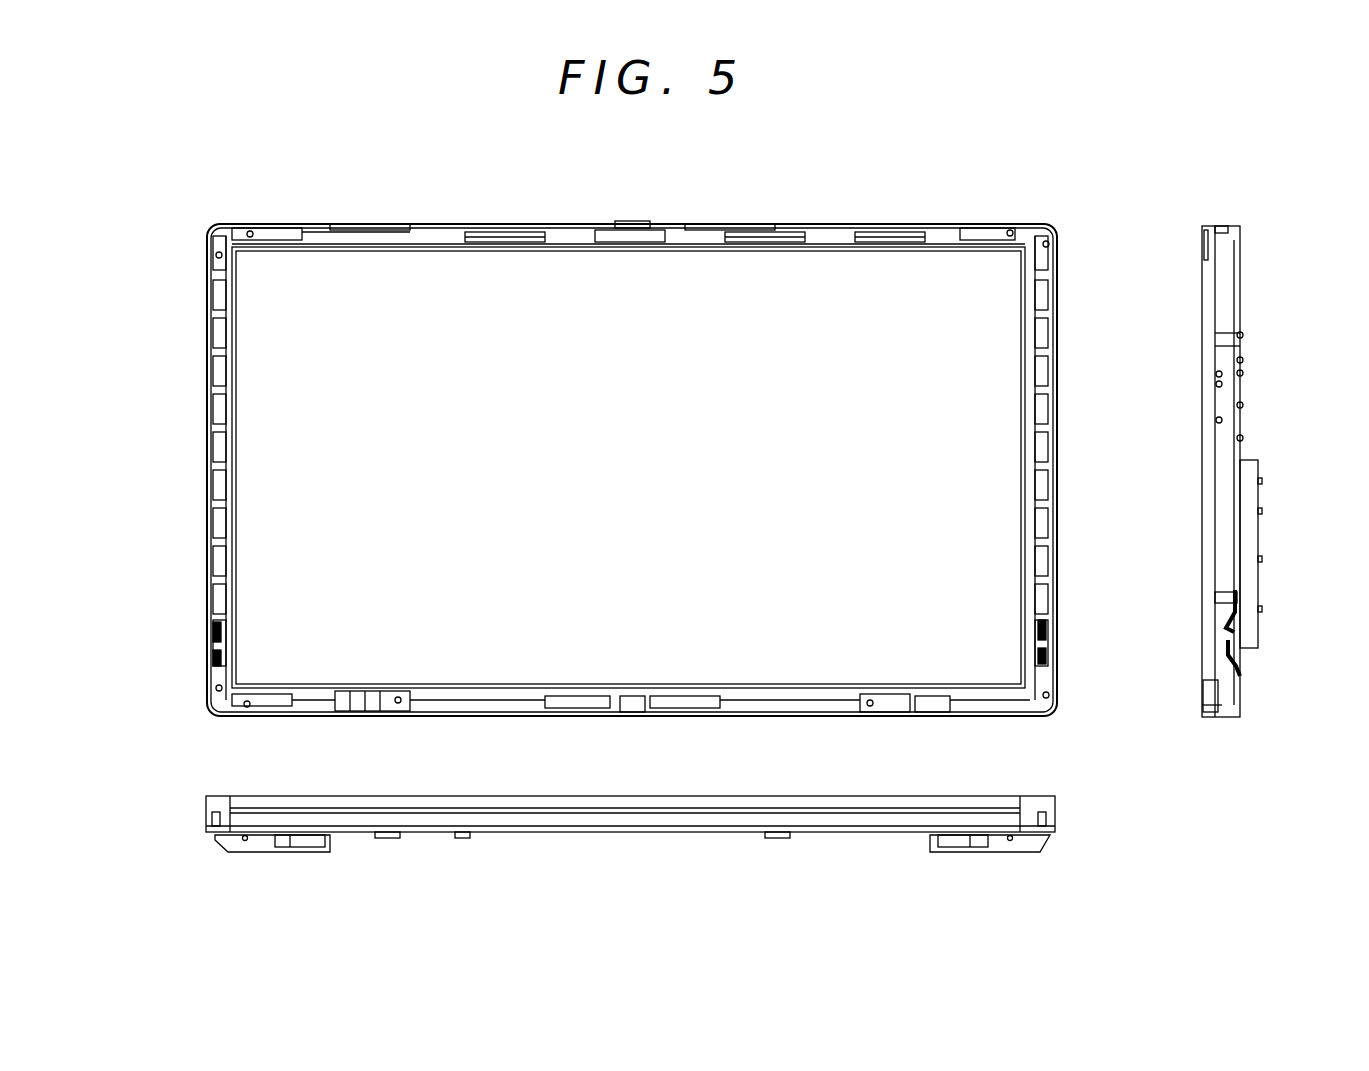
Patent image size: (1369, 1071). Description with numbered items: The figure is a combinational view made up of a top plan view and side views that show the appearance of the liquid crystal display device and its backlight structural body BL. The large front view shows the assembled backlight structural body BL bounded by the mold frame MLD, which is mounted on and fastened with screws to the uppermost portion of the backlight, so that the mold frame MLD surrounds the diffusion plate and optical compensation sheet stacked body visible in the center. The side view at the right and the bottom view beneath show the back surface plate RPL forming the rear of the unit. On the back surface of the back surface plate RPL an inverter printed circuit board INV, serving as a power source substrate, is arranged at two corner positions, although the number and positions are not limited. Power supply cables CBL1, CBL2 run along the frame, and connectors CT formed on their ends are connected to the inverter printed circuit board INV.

The backlight structural body BL is at (484, 222).
The mold frame MLD is at (793, 224).
The back surface plate RPL is at (1228, 245).
The inverter printed circuit board INV is at (1260, 516).
The connector CT is at (1225, 600).
The power supply cable CBL1 is at (208, 634).
The power supply cable CBL2 is at (206, 668).